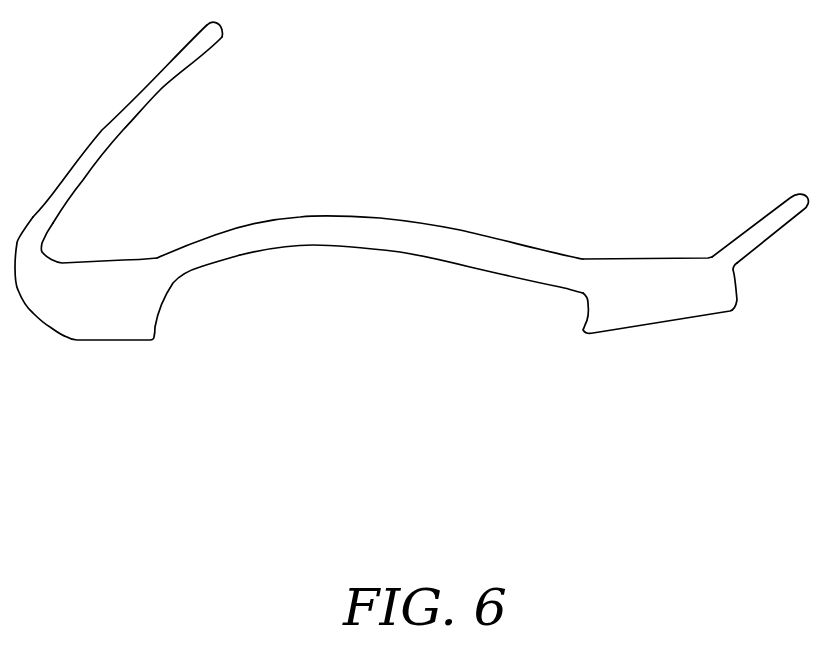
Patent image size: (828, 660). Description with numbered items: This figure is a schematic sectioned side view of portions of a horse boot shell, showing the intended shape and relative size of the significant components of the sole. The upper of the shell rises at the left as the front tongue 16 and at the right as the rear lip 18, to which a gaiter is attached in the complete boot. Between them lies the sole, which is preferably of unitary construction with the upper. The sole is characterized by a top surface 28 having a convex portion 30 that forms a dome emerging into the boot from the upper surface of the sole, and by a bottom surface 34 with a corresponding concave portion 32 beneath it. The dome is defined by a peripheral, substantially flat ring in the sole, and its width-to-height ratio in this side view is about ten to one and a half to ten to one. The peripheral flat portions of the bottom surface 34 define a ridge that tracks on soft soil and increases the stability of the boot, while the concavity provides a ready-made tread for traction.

The front tongue 16 is at (128, 103).
The rear lip 18 is at (790, 193).
The top surface 28 is at (623, 260).
The convex portion 30 is at (410, 238).
The concave portion 32 is at (319, 245).
The bottom surface 34 is at (123, 340).